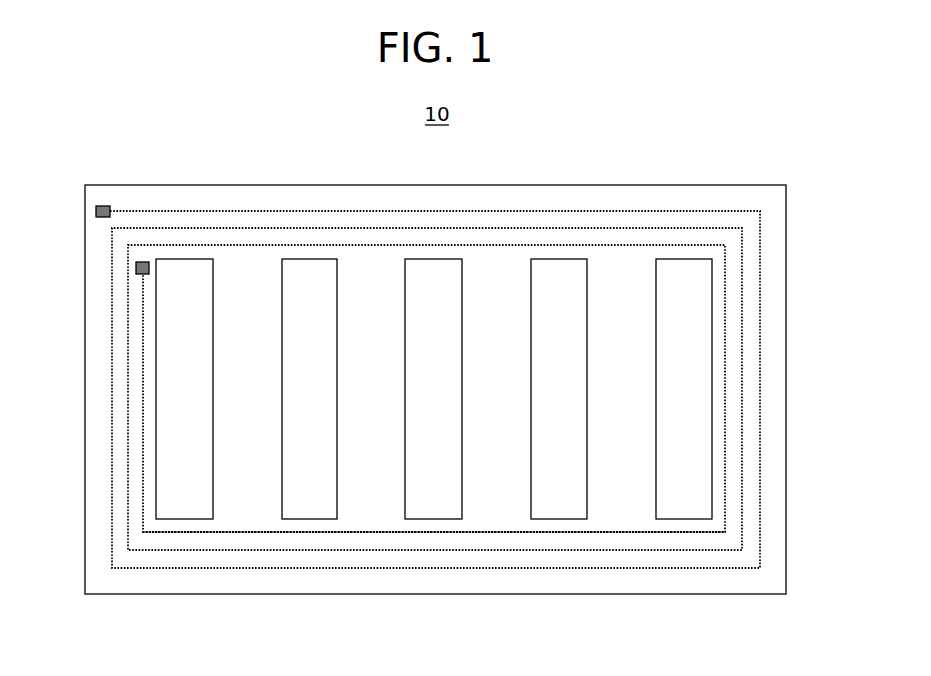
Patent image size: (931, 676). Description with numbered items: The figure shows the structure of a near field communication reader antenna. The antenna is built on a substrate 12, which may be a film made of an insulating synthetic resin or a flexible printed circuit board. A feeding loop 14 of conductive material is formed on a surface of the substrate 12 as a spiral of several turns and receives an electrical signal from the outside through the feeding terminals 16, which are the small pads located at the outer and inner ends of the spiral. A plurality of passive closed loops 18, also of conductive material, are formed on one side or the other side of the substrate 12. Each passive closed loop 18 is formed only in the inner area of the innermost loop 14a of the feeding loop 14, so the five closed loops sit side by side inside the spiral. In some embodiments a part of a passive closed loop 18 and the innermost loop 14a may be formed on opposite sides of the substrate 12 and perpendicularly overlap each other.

The substrate 12 is at (668, 185).
The feeding loop 14 is at (560, 211).
The innermost loop 14a is at (370, 532).
The feeding terminals 16 is at (103, 206).
The passive closed loops 18 is at (182, 519).